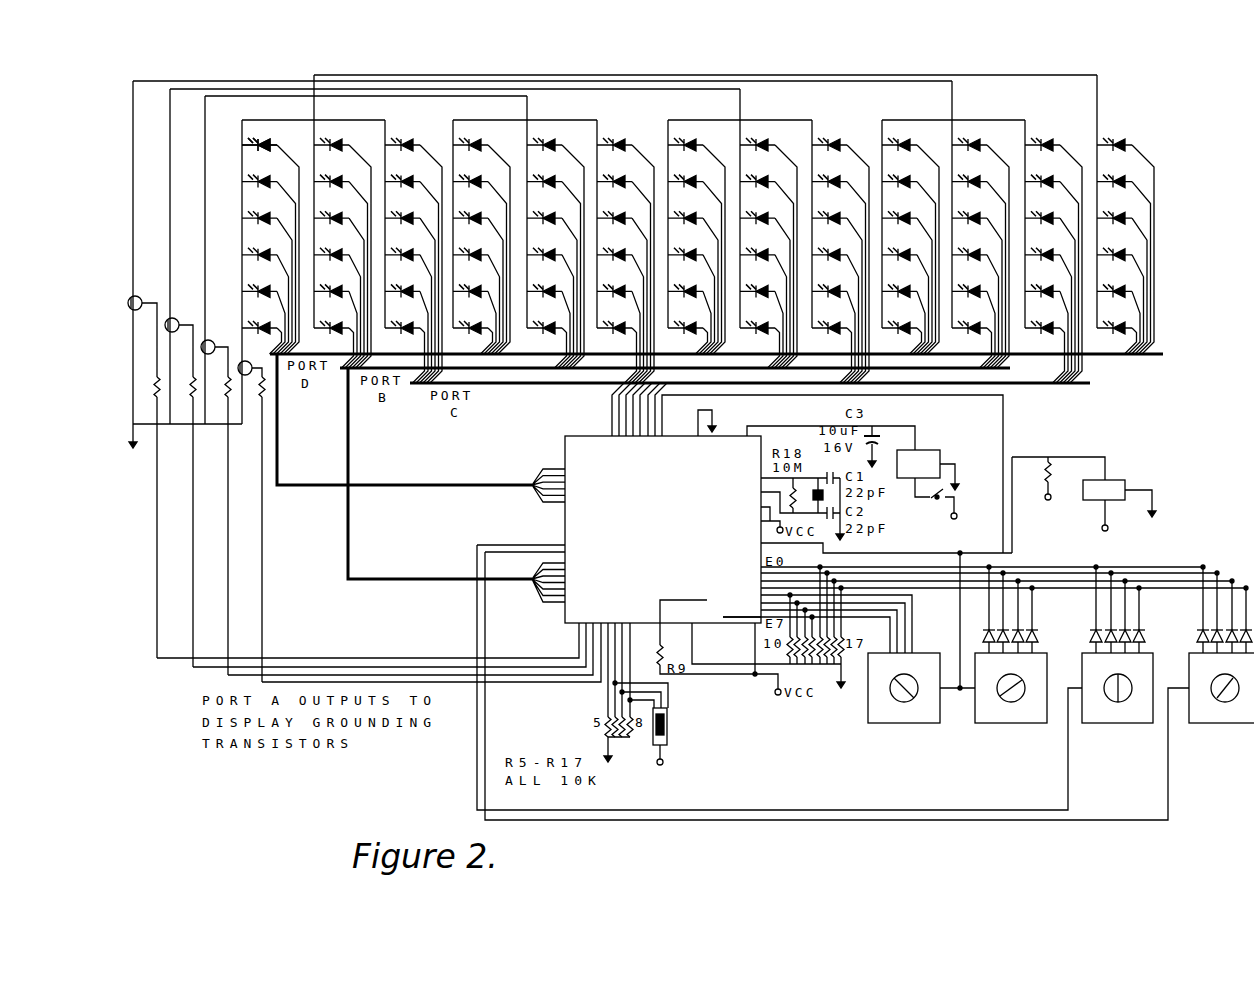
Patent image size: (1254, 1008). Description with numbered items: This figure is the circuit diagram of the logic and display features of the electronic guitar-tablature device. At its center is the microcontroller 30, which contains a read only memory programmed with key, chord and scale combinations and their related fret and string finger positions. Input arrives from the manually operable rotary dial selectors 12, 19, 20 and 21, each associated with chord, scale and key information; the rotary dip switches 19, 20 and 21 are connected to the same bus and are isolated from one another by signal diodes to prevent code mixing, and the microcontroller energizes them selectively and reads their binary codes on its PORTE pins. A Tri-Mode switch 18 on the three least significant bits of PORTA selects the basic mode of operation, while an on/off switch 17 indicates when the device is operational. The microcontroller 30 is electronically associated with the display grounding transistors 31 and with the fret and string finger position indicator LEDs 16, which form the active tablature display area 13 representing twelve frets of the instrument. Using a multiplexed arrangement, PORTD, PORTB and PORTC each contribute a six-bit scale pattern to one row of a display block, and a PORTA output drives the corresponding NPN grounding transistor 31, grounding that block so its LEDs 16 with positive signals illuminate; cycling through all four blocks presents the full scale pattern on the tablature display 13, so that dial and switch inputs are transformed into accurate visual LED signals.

The selector dial 12 is at (900, 723).
The active tablature display area 13 is at (1142, 84).
The indicator LEDs 16 is at (257, 140).
The on/off switch 17 is at (953, 503).
The switch 18 is at (654, 745).
The selector dial 19 is at (1008, 723).
The selector dial 20 is at (1118, 723).
The selector dial 21 is at (1225, 723).
The microcontroller 30 is at (588, 520).
The display grounding transistors 31 is at (166, 328).